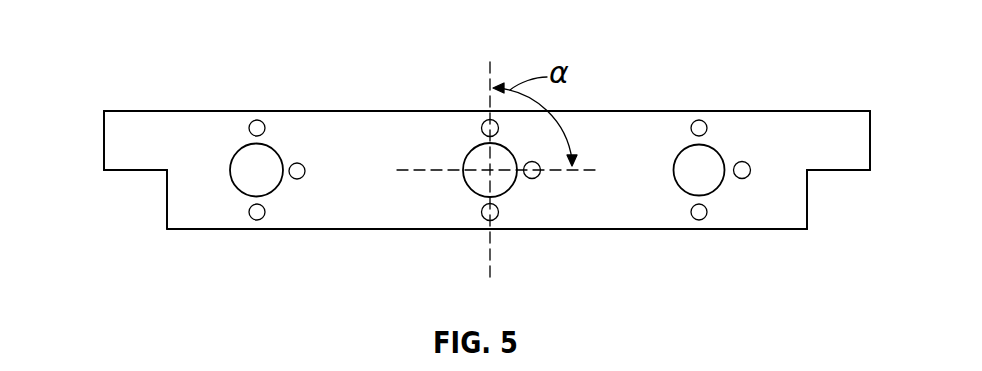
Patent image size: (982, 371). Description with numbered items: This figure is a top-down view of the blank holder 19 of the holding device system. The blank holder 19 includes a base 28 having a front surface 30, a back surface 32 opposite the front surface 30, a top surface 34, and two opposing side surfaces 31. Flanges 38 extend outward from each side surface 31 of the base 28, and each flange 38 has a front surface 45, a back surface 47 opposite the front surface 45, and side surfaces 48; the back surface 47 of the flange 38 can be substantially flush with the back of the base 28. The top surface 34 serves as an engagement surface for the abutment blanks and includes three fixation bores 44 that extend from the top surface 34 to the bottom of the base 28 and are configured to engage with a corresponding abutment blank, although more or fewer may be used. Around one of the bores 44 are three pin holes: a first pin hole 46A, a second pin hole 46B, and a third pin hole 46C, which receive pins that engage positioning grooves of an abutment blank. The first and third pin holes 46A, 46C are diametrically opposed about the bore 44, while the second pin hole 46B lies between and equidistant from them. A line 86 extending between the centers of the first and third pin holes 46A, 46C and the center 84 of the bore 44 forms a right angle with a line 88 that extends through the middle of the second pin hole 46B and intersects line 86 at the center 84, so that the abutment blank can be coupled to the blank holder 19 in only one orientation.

The blank holder 19 is at (111, 49).
The back surface of flange 47 is at (148, 110).
The back surface of base 32 is at (587, 110).
The side surfaces of flange 48 is at (104, 141).
The front surface of flange 45 is at (136, 172).
The flange 38 is at (843, 172).
The side surface of base 31 is at (165, 215).
The front surface of base 30 is at (540, 230).
The base 28 is at (677, 230).
The fixation bore 44 is at (245, 173).
The first pin hole 46A is at (260, 216).
The second pin hole 46B is at (304, 177).
The third pin hole 46C is at (253, 121).
The center of bore 84 is at (487, 172).
The line 86 is at (488, 65).
The line 88 is at (408, 167).
The top surface of base 34 is at (735, 127).